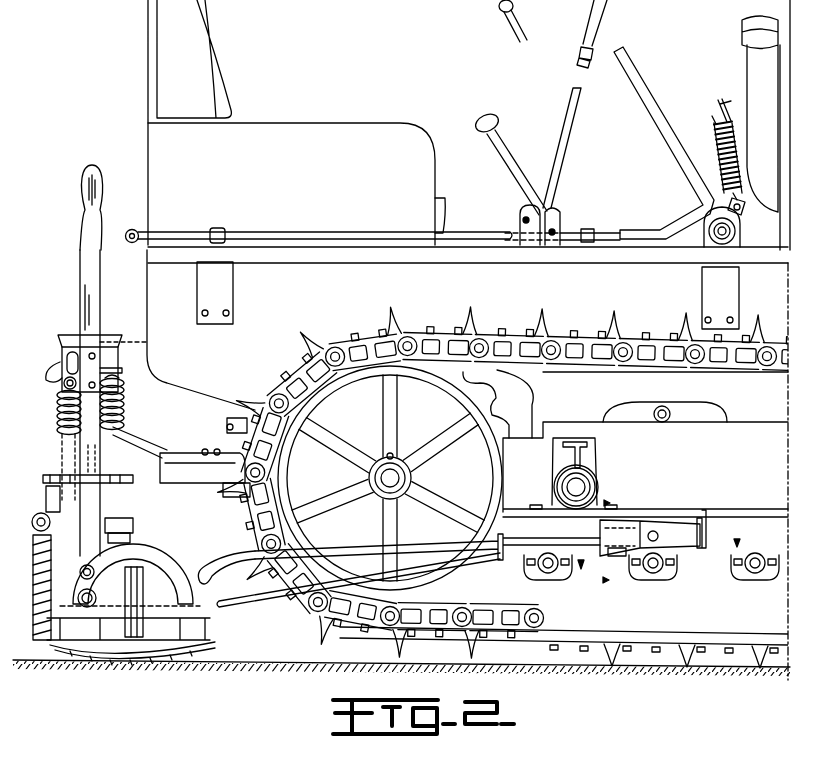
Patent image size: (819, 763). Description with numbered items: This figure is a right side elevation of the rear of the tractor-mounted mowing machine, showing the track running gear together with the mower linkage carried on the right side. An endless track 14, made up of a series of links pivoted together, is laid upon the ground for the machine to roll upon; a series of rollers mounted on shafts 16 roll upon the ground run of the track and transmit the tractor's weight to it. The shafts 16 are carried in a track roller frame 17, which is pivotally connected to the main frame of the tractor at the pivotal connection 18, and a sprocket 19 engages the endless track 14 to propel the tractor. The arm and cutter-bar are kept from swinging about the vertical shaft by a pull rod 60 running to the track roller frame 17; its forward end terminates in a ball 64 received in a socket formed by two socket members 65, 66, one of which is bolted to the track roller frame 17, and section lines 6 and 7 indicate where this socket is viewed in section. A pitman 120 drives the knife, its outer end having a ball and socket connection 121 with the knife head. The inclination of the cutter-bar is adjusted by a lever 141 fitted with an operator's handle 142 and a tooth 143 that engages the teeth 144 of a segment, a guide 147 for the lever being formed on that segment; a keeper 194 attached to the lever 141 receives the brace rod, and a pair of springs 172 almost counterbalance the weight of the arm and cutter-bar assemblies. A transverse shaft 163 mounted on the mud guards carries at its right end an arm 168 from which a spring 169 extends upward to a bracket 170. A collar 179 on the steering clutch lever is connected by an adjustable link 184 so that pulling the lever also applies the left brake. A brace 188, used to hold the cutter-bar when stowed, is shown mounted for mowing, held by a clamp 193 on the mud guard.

The section line 6- 6 is at (594, 490).
The section line 7- 7 is at (581, 564).
The endless track 14 is at (566, 650).
The shafts 16 is at (548, 574).
The track roller frame 17 is at (770, 520).
The pivotal connection 18 is at (580, 490).
The sprocket 19 is at (493, 393).
The pull rod 60 is at (466, 547).
The ball 64 is at (645, 488).
The socket member 65 is at (699, 500).
The socket member 66 is at (618, 558).
The pitman 120 is at (140, 578).
The ball and socket connection 121 is at (150, 640).
The lever 141 is at (80, 263).
The operator's handle 142 is at (85, 178).
The tooth 143 is at (86, 455).
The teeth 144 is at (66, 470).
The guide 147 is at (46, 503).
The transverse shaft 163 is at (731, 249).
The arm 168 is at (734, 210).
The spring 169 is at (718, 136).
The bracket 170 is at (722, 100).
The springs 172 is at (58, 408).
The collar 179 is at (531, 213).
The adjustable link 184 is at (606, 232).
The brace 188 is at (319, 232).
The clamp 193 is at (222, 231).
The keeper 194 is at (134, 213).